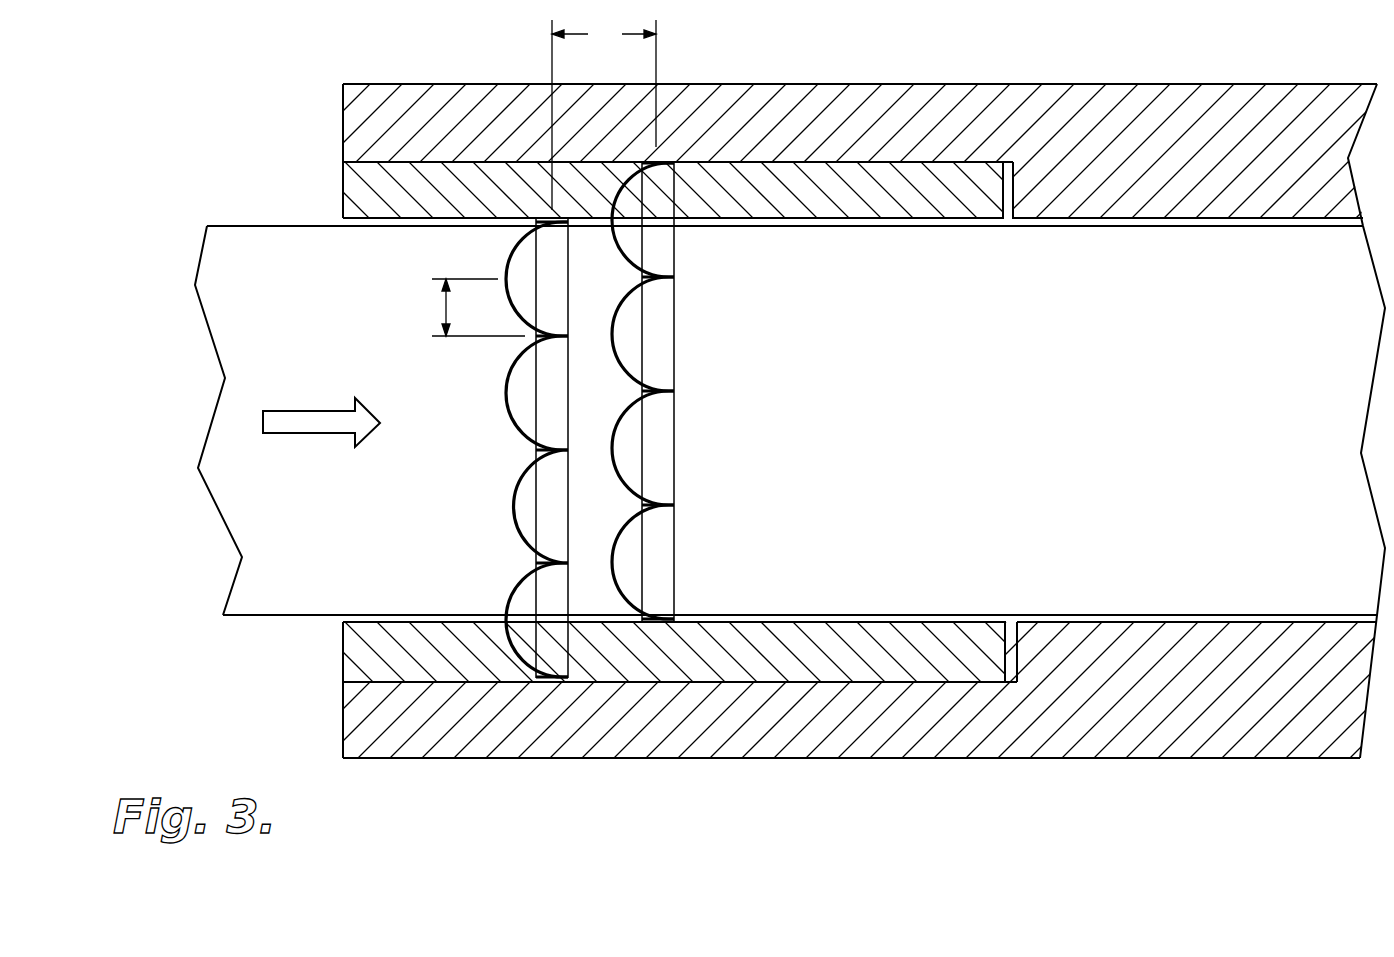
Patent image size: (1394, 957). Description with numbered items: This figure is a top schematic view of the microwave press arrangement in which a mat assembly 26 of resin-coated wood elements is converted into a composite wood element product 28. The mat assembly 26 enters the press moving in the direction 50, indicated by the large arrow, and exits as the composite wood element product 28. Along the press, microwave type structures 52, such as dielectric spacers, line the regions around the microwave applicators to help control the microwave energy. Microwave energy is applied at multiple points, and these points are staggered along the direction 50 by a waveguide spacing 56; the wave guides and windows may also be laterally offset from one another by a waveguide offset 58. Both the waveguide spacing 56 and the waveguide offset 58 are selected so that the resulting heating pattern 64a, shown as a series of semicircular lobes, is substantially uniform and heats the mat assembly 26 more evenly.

The mat assembly 26 is at (382, 540).
The composite wood element product 28 is at (1262, 401).
The direction of the mat entering the press 50 is at (305, 434).
The microwave type structures 52 is at (883, 213).
The waveguide spacing 56 is at (604, 115).
The waveguide offset 58 is at (444, 309).
The heating pattern 64a is at (507, 503).